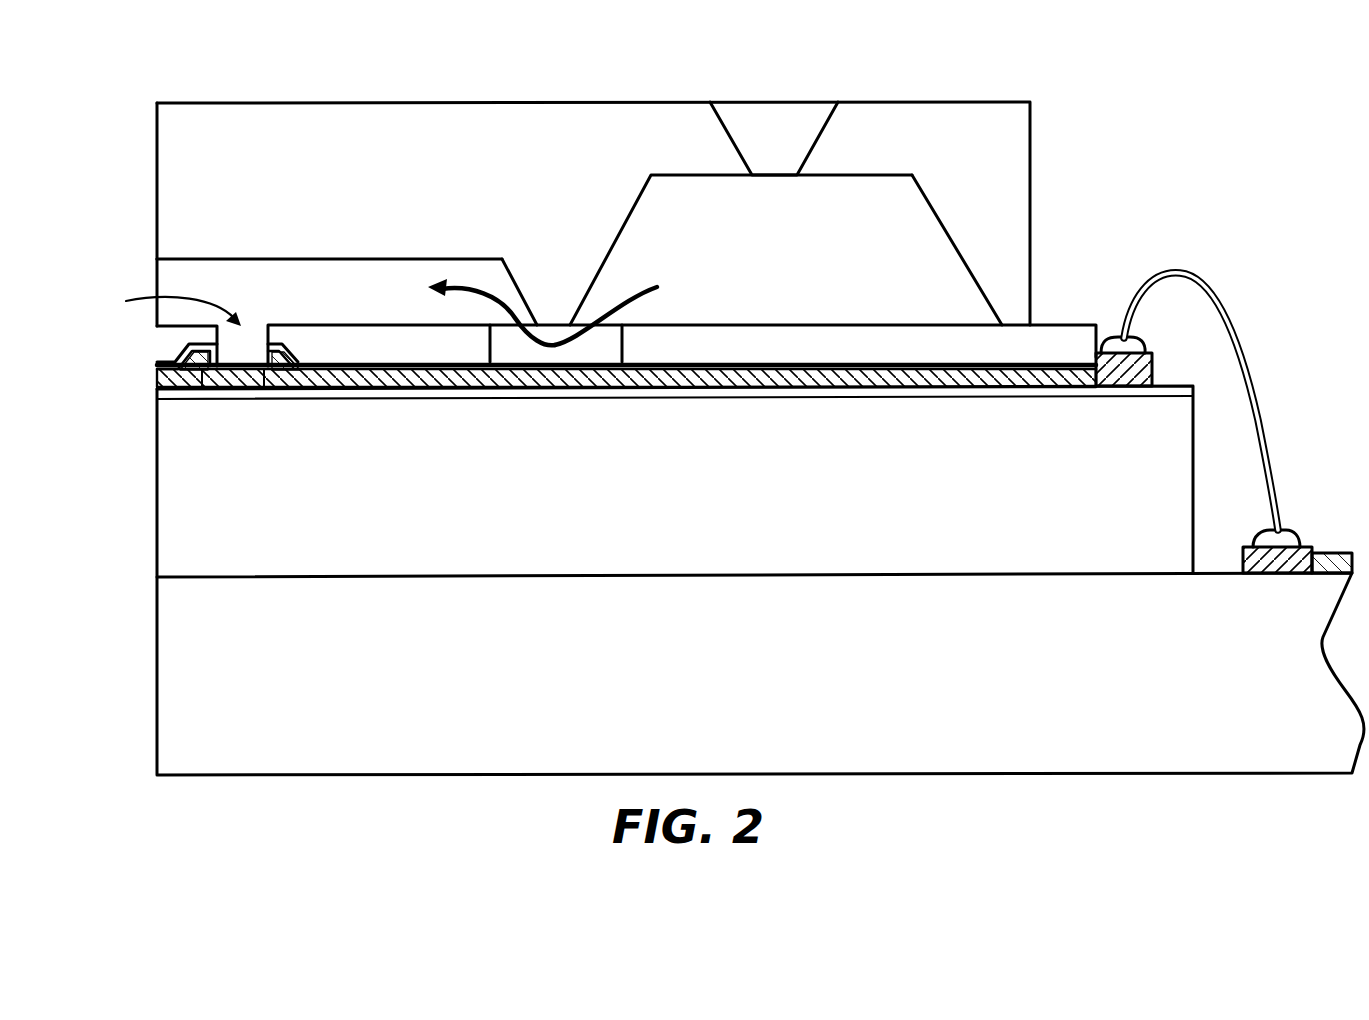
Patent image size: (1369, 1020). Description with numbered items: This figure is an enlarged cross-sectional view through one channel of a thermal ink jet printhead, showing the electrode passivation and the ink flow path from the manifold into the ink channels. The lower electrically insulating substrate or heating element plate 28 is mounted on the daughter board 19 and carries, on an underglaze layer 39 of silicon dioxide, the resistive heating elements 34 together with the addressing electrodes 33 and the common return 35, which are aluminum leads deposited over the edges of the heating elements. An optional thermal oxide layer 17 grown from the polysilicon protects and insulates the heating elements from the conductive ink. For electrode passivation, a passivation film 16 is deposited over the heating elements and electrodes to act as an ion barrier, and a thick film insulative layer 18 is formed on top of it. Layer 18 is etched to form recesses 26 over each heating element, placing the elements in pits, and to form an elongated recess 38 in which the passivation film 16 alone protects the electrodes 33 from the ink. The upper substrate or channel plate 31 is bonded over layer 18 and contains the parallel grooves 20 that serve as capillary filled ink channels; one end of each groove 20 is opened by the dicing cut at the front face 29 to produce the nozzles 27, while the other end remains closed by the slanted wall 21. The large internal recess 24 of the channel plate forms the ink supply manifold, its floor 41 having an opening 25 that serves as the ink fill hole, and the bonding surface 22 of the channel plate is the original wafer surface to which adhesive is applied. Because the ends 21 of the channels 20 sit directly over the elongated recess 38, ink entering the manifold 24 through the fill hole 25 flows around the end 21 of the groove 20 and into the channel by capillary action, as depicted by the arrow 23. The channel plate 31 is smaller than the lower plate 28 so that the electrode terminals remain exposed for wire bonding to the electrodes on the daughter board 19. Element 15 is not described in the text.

The insulating layer 15 is at (617, 343).
The passivation film 16 is at (157, 365).
The thermal oxide layer 17 is at (236, 372).
The thick film insulative layer 18 is at (157, 343).
The daughter board 19 is at (157, 680).
The grooves 20 is at (277, 261).
The slanted wall 21 is at (507, 282).
The surface 22 is at (557, 321).
The arrow 23 is at (620, 290).
The internal recess 24 is at (753, 265).
The opening 25 is at (778, 117).
The recesses 26 is at (167, 309).
The nozzles 27 is at (157, 277).
The heating element plate 28 is at (157, 532).
The front face 29 is at (157, 143).
The channel plate 31 is at (272, 102).
The addressing electrodes 33 is at (748, 388).
The heating elements 34 is at (263, 388).
The common return 35 is at (178, 388).
The elongated recess 38 is at (503, 336).
The underglaze layer 39 is at (940, 393).
The floor 41 is at (672, 180).